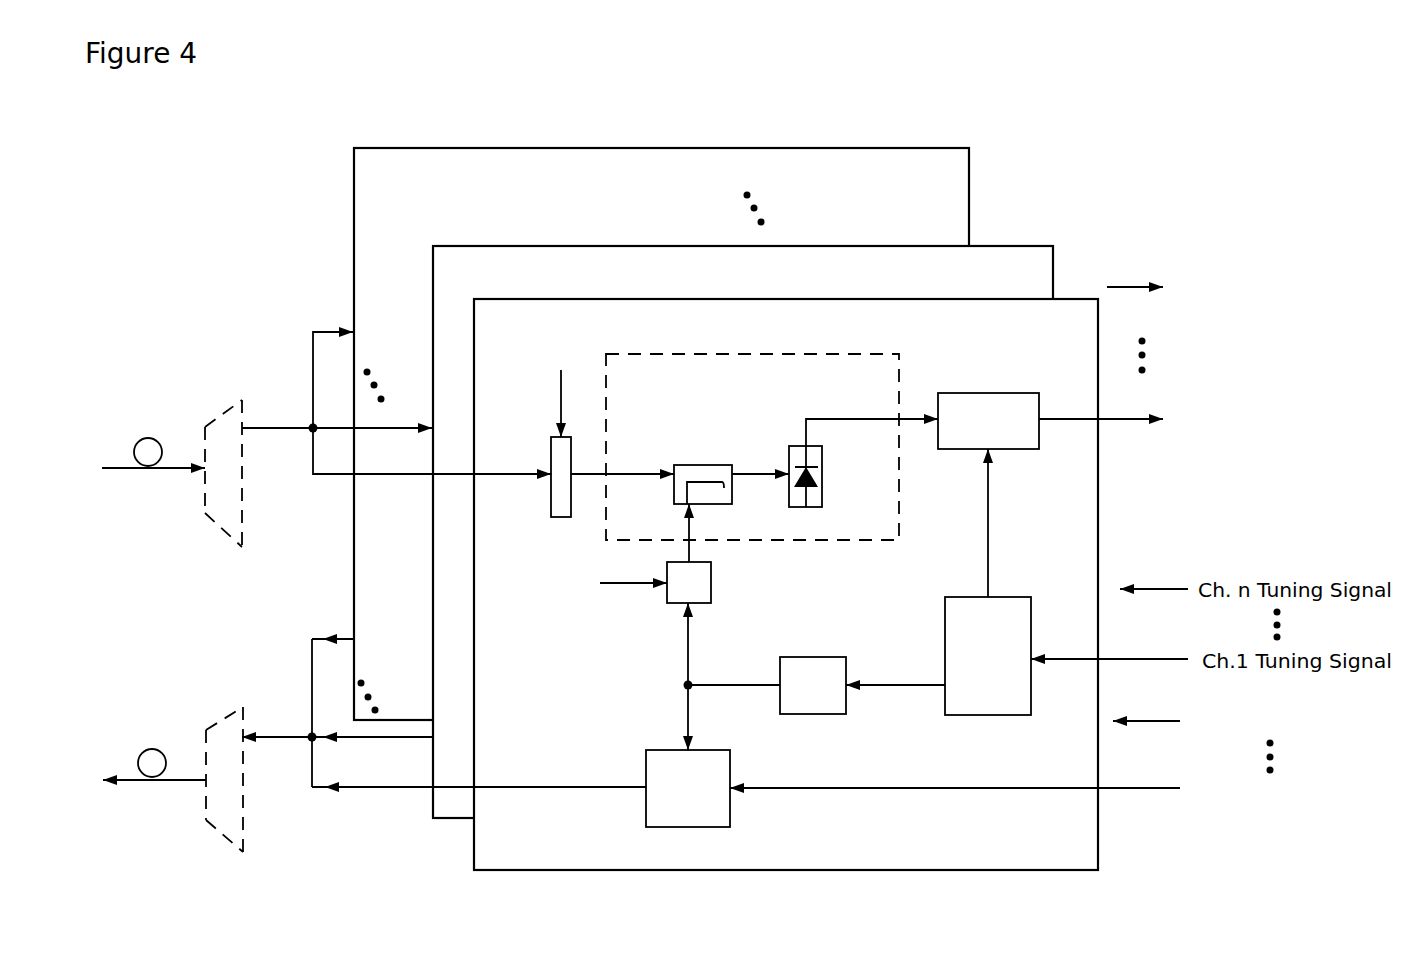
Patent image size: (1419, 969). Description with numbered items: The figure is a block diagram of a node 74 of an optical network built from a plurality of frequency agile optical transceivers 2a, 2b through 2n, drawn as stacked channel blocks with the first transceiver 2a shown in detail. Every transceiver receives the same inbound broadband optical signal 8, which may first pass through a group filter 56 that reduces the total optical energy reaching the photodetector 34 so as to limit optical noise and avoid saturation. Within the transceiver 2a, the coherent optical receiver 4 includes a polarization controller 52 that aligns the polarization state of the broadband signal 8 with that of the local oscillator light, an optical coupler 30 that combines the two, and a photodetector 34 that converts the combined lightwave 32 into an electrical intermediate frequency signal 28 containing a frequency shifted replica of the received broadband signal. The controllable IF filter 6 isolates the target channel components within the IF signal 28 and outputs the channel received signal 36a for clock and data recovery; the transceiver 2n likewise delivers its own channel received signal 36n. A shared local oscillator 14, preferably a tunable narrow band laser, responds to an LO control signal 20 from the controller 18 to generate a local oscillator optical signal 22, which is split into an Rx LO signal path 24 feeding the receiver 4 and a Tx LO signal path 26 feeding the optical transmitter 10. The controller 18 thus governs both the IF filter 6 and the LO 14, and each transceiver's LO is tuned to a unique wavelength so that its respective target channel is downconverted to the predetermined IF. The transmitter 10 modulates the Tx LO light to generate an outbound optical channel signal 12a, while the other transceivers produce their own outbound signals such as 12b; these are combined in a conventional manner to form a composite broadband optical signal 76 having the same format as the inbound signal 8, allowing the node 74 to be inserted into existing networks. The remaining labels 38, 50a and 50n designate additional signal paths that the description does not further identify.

The node 74 is at (1115, 127).
The optical transceiver 2n is at (785, 148).
The optical transceiver 2b is at (797, 246).
The optical transceiver 2a is at (918, 870).
The channel received signal 36n is at (1138, 285).
The channel received signal 36a is at (1120, 422).
The group filter 56 is at (230, 410).
The inbound broadband optical signal 8 is at (282, 427).
The coherent optical receiver 4 is at (695, 354).
The polarization controller 52 is at (558, 518).
The optical coupler 30 is at (687, 463).
The combined lightwave 32 is at (759, 474).
The intermediate frequency (IF) signal 28 is at (865, 418).
The photodetector 34 is at (823, 485).
The controllable IF filter 6 is at (983, 392).
The control signal 38 is at (711, 579).
The controller 18 is at (945, 618).
The local oscillator (LO) 14 is at (810, 657).
The local oscillator optical signal 22 is at (713, 683).
The Rx LO signal path 24 is at (682, 657).
The Tx LO signal path 26 is at (683, 712).
The LO control signal 20 is at (910, 685).
The optical transmitter 10 is at (730, 765).
The composite broadband optical signal 76 is at (266, 733).
The outbound optical channel signal 12a is at (395, 787).
The outbound optical channel signal 12b is at (413, 740).
The channel n output signal 50n is at (1148, 721).
The channel 1 output signal 50a is at (1142, 790).